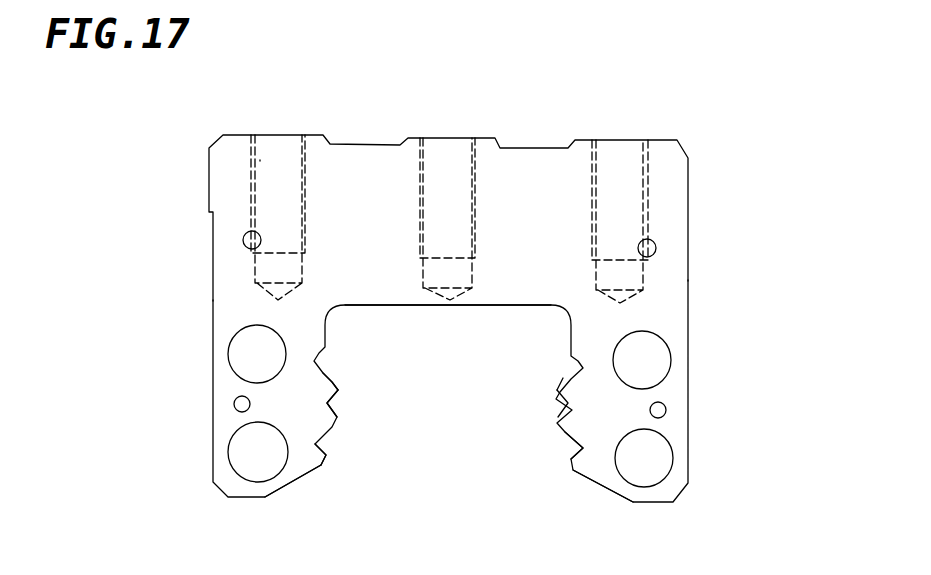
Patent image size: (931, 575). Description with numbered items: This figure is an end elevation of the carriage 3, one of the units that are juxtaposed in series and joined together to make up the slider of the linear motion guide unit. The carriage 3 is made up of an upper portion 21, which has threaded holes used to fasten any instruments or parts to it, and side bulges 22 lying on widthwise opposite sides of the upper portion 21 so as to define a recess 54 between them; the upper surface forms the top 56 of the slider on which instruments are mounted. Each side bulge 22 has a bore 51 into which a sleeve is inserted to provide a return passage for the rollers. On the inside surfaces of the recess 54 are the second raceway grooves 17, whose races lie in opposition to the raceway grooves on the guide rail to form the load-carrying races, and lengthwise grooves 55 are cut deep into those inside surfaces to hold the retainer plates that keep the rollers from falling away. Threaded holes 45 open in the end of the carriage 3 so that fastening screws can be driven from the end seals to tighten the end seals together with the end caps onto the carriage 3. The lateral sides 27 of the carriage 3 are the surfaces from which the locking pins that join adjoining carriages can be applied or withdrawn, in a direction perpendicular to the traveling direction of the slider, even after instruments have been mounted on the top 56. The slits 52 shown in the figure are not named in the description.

The carriage 3 is at (534, 133).
The slit 52 is at (296, 155).
The top 56 is at (410, 137).
The upper portion 21 is at (373, 183).
The threaded hole 45 is at (248, 238).
The lateral side 27 is at (213, 292).
The bore 51 is at (229, 344).
The recess 54 is at (446, 307).
The second raceway groove 17 is at (330, 373).
The lengthwise groove 55 is at (327, 403).
The side bulge 22 is at (297, 420).